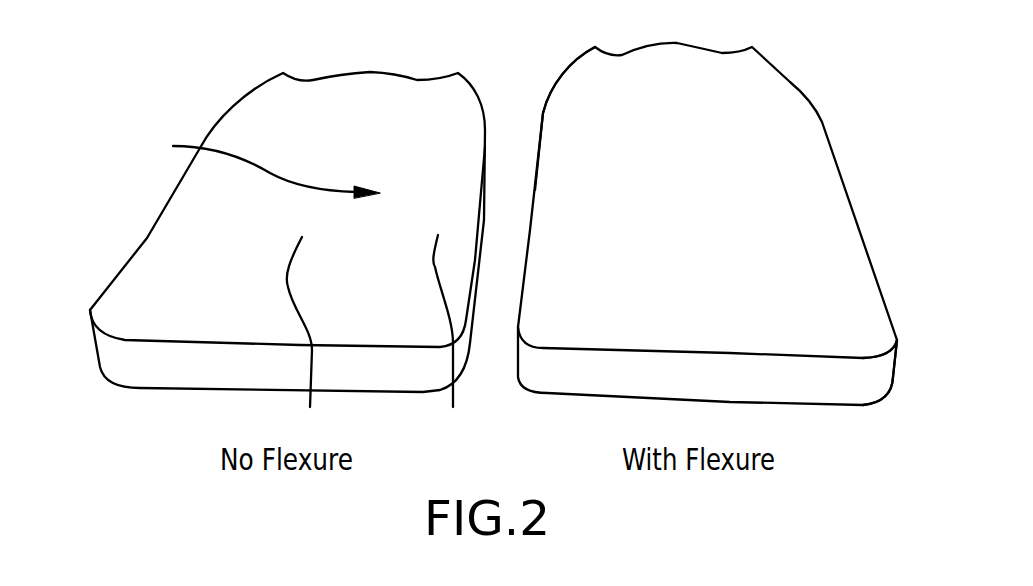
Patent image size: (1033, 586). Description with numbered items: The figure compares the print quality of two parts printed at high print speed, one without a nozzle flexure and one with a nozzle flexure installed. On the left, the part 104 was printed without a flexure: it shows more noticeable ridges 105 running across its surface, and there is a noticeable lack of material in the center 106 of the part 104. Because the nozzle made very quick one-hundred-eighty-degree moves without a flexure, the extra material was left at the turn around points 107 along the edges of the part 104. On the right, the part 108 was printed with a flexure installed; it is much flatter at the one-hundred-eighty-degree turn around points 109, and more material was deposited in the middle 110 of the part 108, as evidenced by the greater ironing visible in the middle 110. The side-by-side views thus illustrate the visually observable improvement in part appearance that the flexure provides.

The part 104 is at (143, 238).
The ridges 105 is at (251, 165).
The center 106 is at (310, 341).
The turn around points 107 is at (454, 340).
The part 108 is at (848, 185).
The turn around points 109 is at (837, 223).
The middle 110 is at (700, 158).